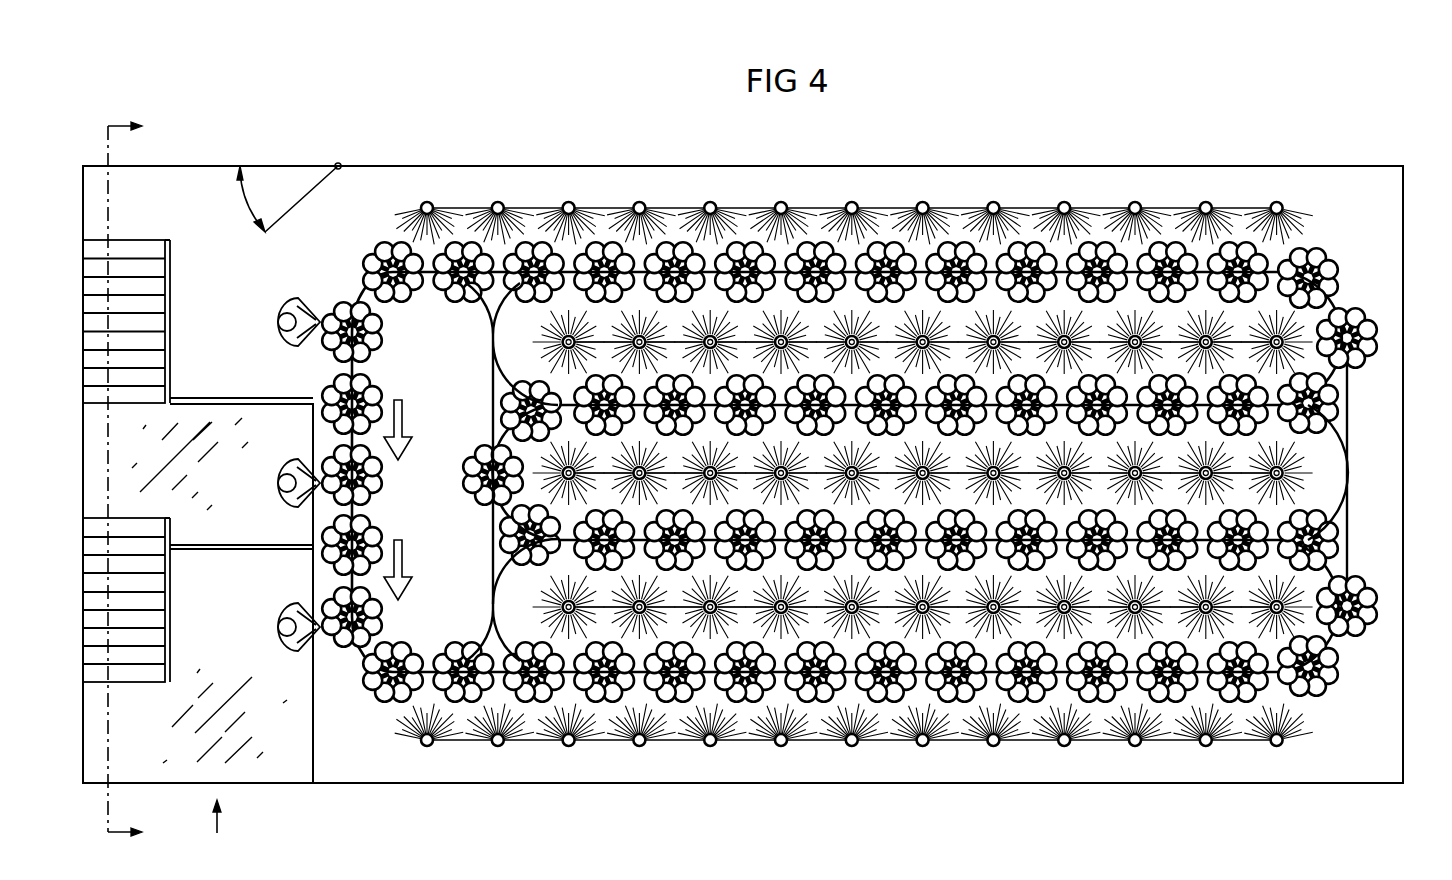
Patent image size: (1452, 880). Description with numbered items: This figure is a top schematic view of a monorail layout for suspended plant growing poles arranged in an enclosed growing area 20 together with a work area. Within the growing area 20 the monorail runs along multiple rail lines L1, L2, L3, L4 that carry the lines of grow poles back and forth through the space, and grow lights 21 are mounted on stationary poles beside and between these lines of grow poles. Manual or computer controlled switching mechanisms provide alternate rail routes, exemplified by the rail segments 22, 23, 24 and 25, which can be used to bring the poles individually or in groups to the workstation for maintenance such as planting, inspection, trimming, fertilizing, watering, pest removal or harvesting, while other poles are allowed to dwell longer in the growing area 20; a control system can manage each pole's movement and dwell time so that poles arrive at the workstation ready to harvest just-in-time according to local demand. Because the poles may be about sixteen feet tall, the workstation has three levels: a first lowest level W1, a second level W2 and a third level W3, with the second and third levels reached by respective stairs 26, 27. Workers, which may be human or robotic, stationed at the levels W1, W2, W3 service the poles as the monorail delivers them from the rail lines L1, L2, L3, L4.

The enclosed growing area 20 is at (660, 182).
The grow lights 21 is at (1137, 204).
The rail segment 22 is at (491, 380).
The rail segment 23 is at (499, 574).
The rail segment 24 is at (1347, 516).
The rail segment 25 is at (1341, 445).
The stairs 26 is at (160, 288).
The stairs 27 is at (160, 586).
The first lowest level W1 is at (268, 322).
The second level W2 is at (268, 483).
The third level W3 is at (268, 627).
The rail line L1 is at (1372, 272).
The rail line L2 is at (1372, 405).
The rail line L3 is at (1372, 540).
The rail line L4 is at (1372, 672).